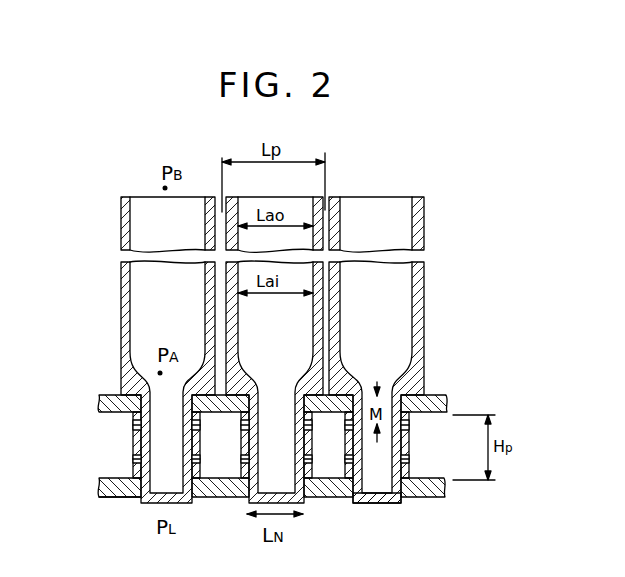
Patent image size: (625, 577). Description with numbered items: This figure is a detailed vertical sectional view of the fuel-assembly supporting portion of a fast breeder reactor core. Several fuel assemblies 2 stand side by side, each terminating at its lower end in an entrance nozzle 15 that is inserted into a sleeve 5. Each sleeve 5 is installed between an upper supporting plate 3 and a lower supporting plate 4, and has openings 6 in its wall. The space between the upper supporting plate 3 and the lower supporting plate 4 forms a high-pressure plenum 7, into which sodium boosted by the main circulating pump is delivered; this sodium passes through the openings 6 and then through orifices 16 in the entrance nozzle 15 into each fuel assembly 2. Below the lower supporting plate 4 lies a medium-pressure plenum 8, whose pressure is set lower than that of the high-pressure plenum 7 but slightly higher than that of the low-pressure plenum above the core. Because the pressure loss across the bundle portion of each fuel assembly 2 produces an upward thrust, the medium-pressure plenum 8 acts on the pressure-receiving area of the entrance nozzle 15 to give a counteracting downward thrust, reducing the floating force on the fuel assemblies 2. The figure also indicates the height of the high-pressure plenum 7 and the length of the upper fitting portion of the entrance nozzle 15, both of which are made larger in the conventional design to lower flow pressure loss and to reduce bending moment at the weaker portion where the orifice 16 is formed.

The fuel assembly 2 is at (424, 297).
The upper supporting plate 3 is at (437, 398).
The lower supporting plate 4 is at (430, 498).
The sleeve 5 is at (409, 446).
The openings 6 is at (409, 471).
The high-pressure plenum 7 is at (122, 453).
The medium-pressure plenum 8 is at (118, 510).
The entrance nozzle 15 is at (358, 506).
The orifice 16 is at (252, 476).